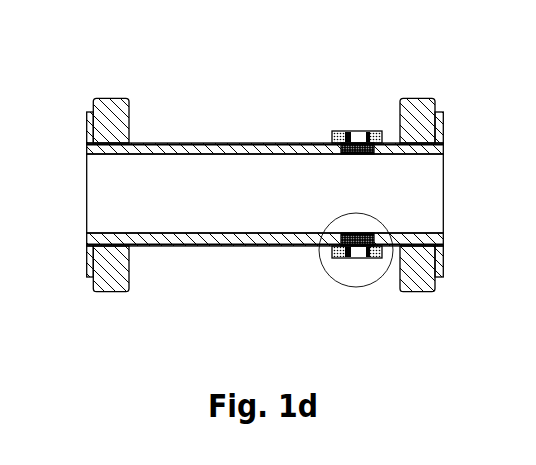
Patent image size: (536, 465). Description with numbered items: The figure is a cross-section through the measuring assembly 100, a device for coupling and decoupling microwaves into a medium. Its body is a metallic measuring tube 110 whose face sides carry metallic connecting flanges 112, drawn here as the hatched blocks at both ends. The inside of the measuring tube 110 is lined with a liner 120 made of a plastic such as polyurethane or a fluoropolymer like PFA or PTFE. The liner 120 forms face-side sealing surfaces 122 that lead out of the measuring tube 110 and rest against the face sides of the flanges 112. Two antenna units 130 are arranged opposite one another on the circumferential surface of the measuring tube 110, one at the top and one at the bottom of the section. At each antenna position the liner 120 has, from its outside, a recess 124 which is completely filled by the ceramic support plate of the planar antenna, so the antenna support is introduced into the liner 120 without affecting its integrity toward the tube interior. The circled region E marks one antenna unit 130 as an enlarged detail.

The measuring assembly 100 is at (167, 65).
The measuring tube 110 is at (192, 143).
The connecting flanges 112 is at (110, 103).
The liner 120 is at (133, 160).
The sealing surfaces 122 is at (88, 133).
The recess 124 is at (353, 155).
The antenna units 130 is at (343, 130).
The detail region E is at (383, 277).